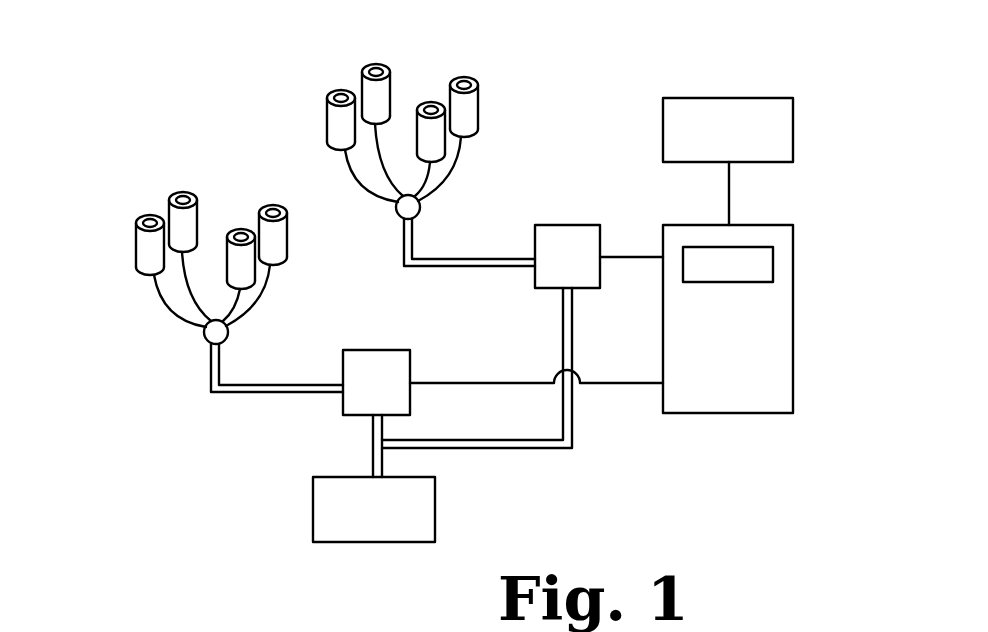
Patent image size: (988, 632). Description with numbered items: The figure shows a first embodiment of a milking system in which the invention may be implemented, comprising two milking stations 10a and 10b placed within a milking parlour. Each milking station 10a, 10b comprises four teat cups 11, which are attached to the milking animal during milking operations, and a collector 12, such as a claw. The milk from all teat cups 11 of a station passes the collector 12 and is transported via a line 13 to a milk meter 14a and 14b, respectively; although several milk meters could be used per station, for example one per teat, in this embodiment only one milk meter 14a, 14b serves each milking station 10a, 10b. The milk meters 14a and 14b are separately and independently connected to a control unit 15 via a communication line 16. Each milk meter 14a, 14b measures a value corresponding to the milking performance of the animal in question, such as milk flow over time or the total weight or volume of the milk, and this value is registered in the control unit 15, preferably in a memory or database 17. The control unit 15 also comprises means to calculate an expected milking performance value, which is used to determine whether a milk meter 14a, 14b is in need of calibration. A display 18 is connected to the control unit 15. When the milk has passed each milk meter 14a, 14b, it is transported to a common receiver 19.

The milking station 10a is at (124, 172).
The milking station 10b is at (298, 70).
The teat cup 11 is at (261, 222).
The collector 12 is at (212, 338).
The line 13 is at (273, 385).
The milk meter 14a is at (387, 366).
The milk meter 14b is at (565, 247).
The control unit 15 is at (775, 363).
The communication line 16 is at (632, 258).
The memory or database 17 is at (750, 265).
The display 18 is at (775, 123).
The common receiver 19 is at (333, 505).